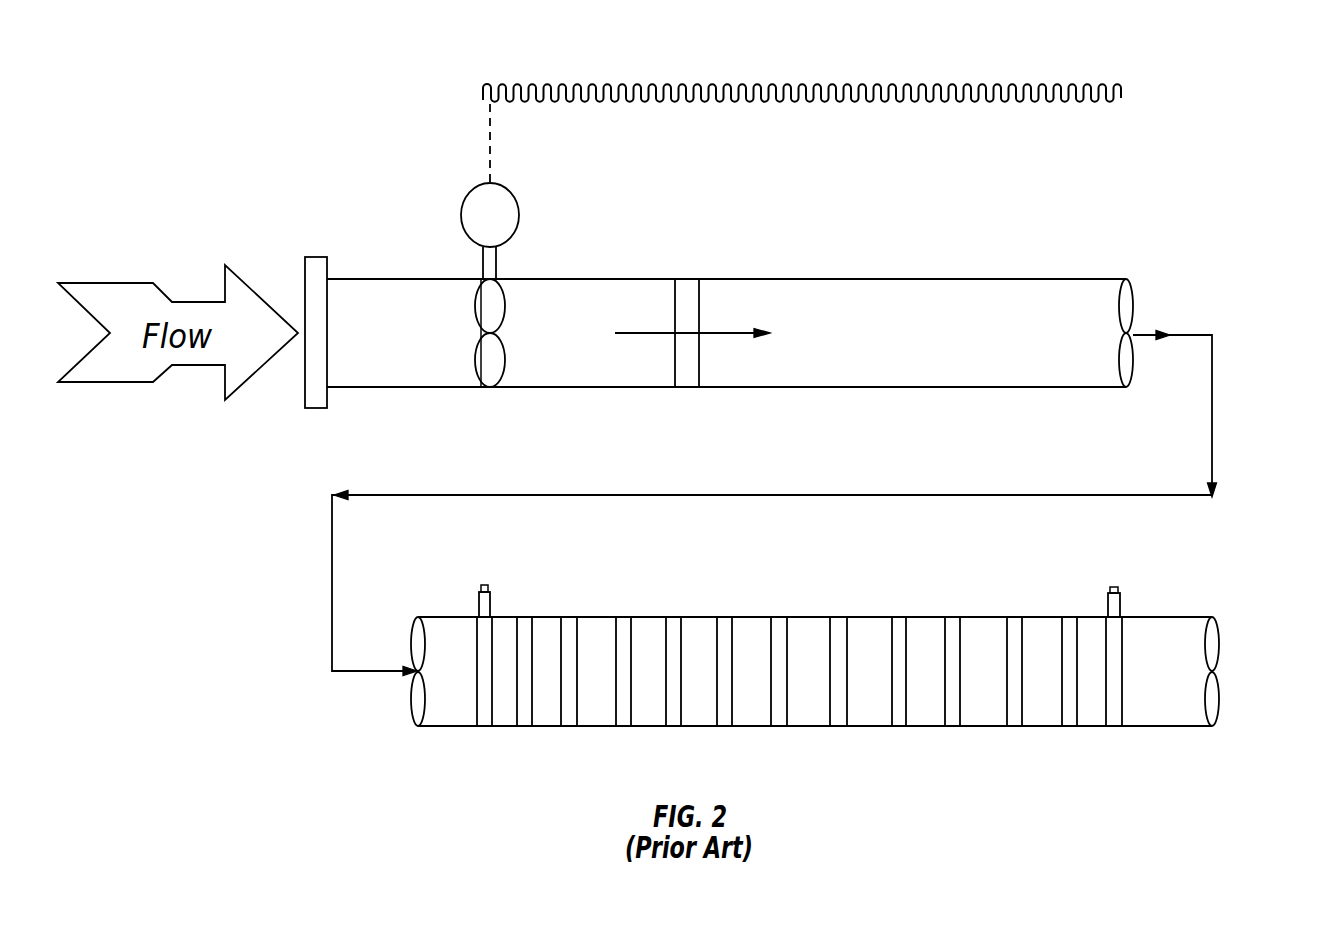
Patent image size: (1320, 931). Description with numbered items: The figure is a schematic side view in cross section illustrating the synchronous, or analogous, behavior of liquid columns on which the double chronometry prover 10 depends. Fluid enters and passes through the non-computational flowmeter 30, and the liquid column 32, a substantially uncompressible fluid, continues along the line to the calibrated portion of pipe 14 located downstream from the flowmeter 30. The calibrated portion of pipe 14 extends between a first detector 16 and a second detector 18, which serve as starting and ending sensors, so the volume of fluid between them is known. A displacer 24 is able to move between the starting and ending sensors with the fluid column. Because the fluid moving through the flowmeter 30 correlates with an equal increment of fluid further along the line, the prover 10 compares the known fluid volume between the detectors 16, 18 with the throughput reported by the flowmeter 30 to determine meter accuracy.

The double chronometry prover 10 is at (1154, 765).
The calibrated portion of pipe 14 is at (809, 617).
The first detector 16 is at (476, 606).
The second detector 18 is at (1124, 606).
The displacer 24 is at (687, 301).
The non-computational flowmeter 30 is at (524, 260).
The liquid column 32 is at (1213, 418).